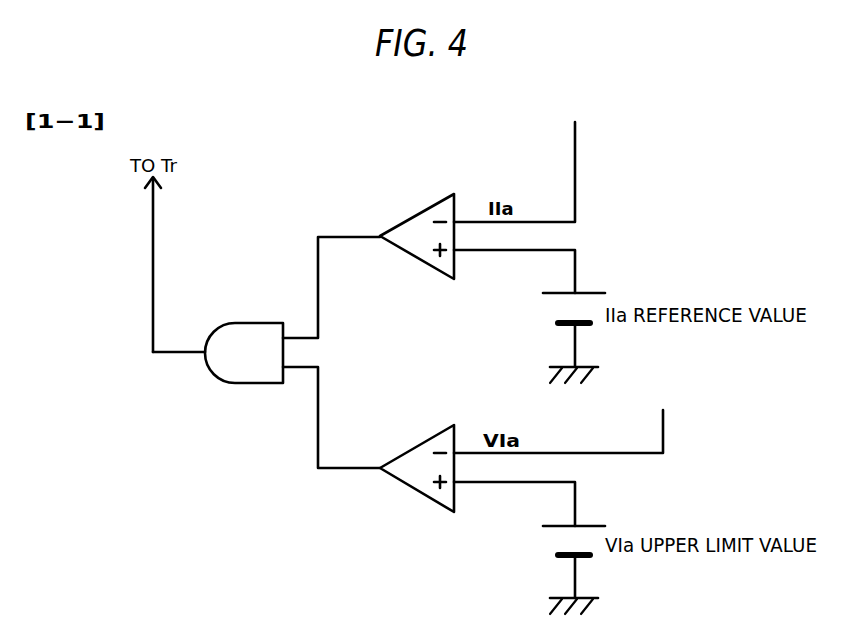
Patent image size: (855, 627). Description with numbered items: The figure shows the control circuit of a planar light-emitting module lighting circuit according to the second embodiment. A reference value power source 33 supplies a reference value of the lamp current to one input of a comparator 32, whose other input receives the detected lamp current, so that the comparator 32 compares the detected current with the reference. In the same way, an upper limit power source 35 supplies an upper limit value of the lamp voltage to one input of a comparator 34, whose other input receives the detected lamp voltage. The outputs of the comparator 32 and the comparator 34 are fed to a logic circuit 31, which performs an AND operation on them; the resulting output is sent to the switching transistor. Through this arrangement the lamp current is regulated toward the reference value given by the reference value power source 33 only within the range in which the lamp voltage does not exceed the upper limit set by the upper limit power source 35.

The logic circuit 31 is at (246, 323).
The comparator 32 is at (410, 218).
The Ila reference value power source 33 is at (588, 292).
The comparator 34 is at (409, 450).
The Vla upper limit power source 35 is at (588, 525).